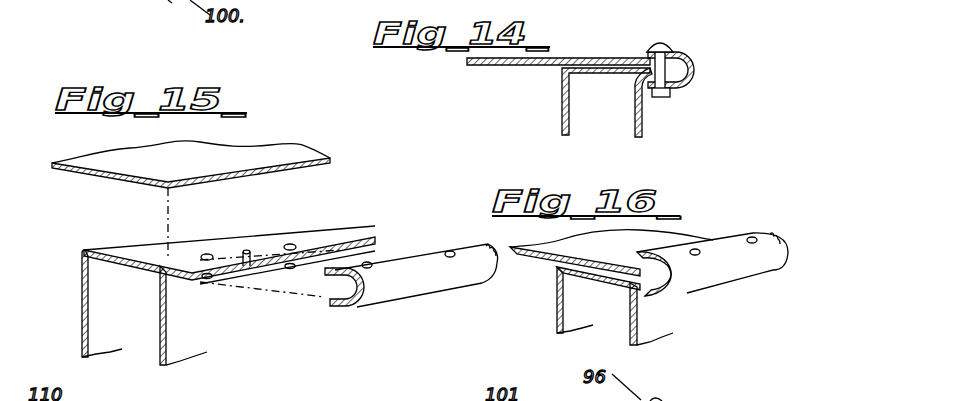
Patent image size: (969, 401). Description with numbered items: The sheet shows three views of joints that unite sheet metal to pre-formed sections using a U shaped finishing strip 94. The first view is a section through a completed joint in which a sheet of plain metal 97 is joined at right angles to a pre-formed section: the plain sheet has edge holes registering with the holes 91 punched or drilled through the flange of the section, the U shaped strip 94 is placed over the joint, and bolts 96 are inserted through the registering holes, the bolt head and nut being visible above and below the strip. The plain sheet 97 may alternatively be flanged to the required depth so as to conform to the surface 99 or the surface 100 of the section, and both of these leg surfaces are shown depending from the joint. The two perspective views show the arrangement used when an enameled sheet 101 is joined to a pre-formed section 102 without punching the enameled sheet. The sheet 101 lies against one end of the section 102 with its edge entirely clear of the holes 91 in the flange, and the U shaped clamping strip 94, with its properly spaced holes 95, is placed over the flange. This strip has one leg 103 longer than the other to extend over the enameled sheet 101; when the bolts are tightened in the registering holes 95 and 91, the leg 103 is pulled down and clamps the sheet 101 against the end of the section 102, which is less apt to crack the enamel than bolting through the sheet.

In FIG. 15, the holes 91 is at (289, 245).
In FIG. 15, the U shaped strip 94 is at (386, 270).
In FIG. 14, the U shaped strip 94 is at (699, 80).
In FIG. 16, the U shaped strip 94 is at (712, 273).
In FIG. 15, the holes 95 is at (449, 251).
In FIG. 16, the holes 95 is at (696, 249).
In FIG. 14, the bolts 96 is at (651, 44).
In FIG. 14, the sheet of plain metal 97 is at (536, 66).
In FIG. 14, the surface 99 is at (562, 106).
In FIG. 14, the surface 100 is at (644, 117).
In FIG. 15, the enameled sheet 101 is at (140, 168).
In FIG. 16, the enameled sheet 101 is at (542, 258).
In FIG. 15, the pre-formed section 102 is at (228, 295).
In FIG. 16, the pre-formed section 102 is at (615, 306).
In FIG. 15, the leg 103 is at (335, 276).